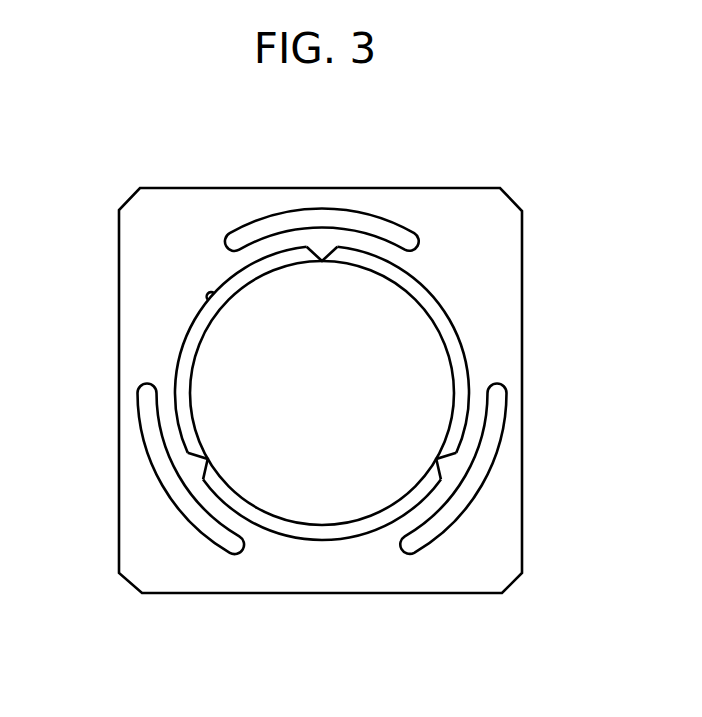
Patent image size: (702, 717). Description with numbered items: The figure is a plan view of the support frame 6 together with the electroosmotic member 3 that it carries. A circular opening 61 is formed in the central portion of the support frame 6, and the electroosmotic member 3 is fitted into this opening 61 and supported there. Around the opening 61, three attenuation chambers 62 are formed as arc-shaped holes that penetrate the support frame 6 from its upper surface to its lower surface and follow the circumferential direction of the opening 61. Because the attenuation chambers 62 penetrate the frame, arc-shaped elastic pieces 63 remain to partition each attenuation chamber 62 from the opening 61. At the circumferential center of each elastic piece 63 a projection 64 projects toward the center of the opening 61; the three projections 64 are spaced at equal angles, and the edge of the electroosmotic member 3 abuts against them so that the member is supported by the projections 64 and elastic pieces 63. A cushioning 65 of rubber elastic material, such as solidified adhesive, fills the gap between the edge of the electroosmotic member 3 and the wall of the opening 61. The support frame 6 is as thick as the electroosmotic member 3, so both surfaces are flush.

The electroosmotic member 3 is at (433, 372).
The support frame 6 is at (455, 218).
The opening 61 is at (212, 294).
The attenuation chamber 62 is at (268, 220).
The elastic piece 63 is at (383, 243).
The projection 64 is at (323, 250).
The cushioning 65 is at (437, 312).